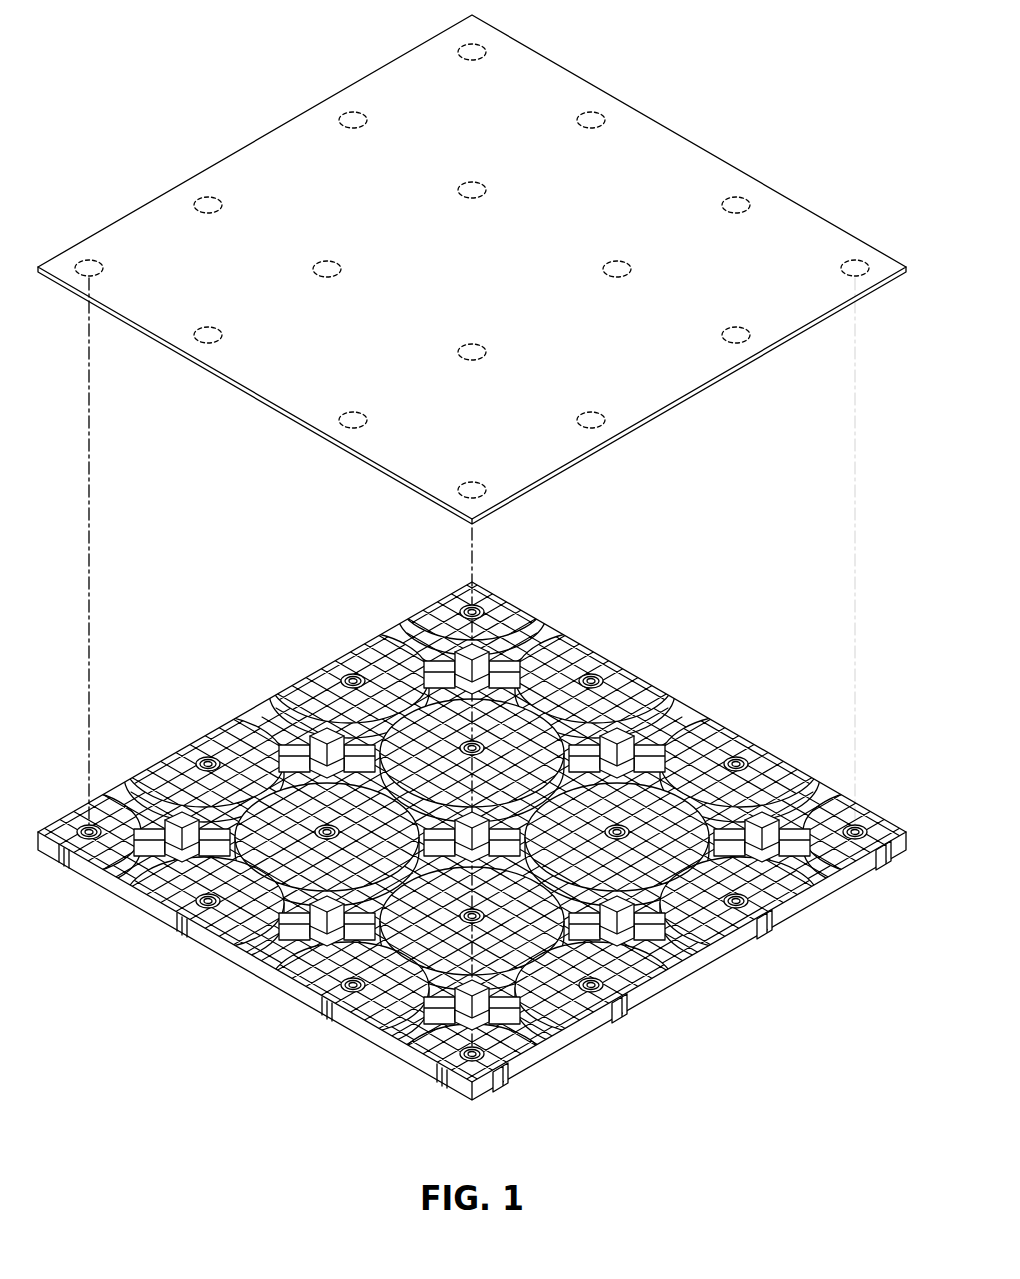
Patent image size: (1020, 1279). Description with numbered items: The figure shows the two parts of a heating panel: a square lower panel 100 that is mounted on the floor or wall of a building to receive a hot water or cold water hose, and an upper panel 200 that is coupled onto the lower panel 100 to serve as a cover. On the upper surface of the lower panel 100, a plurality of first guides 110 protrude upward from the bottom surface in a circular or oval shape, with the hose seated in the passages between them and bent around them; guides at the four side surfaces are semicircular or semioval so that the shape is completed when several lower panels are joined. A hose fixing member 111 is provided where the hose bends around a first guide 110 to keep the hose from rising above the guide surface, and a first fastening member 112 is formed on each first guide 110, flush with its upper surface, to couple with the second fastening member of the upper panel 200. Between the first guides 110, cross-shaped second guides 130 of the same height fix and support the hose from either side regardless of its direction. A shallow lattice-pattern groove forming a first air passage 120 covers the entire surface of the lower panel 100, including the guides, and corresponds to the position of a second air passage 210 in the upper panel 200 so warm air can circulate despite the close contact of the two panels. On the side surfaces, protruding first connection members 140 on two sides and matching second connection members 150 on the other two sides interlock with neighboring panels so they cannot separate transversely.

The lower panel 100 is at (476, 848).
The first guide 110 is at (476, 832).
The hose fixing member 111 is at (393, 672).
The first fastening member 112 is at (210, 757).
The first air passage 120 is at (476, 861).
The second guide 130 is at (622, 740).
The first connection member 140 is at (504, 1094).
The second connection member 150 is at (328, 1010).
The upper panel 200 is at (472, 269).
The second air passage 210 is at (89, 261).